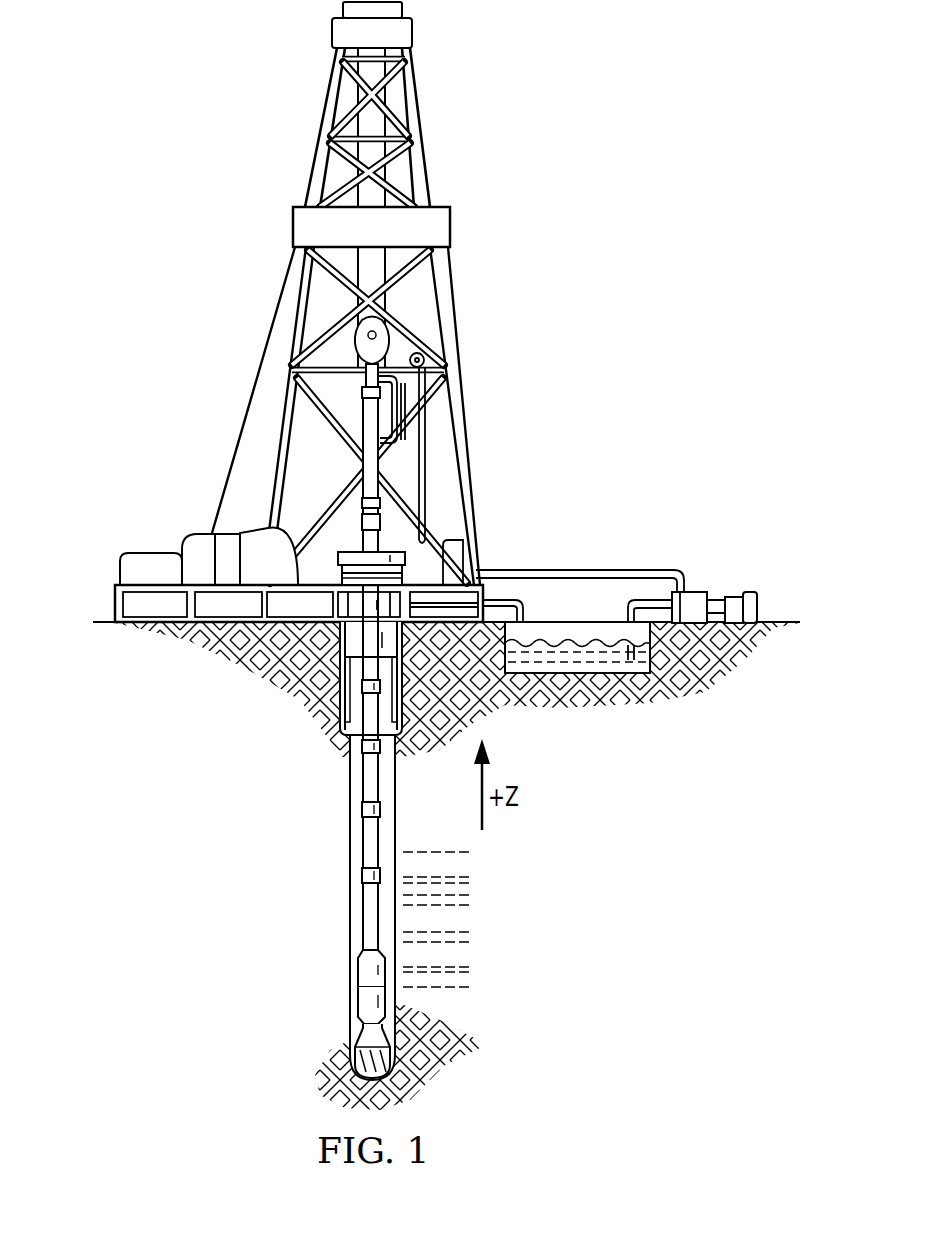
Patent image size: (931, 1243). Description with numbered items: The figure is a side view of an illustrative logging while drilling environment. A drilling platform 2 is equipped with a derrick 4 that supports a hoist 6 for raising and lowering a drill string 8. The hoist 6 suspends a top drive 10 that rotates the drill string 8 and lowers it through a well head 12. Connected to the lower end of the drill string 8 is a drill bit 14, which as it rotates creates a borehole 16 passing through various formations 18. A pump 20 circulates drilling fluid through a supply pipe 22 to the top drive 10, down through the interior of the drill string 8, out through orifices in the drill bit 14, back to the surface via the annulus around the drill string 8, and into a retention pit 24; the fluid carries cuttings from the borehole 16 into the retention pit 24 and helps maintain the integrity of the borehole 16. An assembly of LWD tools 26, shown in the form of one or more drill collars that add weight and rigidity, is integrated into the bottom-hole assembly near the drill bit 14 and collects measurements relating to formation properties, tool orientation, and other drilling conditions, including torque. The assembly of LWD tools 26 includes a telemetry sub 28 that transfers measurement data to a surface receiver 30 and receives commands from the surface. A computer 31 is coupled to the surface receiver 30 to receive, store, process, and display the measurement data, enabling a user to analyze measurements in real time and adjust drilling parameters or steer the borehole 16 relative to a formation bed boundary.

The drilling platform 2 is at (115, 605).
The derrick 4 is at (422, 127).
The hoist 6 is at (356, 350).
The drill string 8 is at (380, 778).
The top drive 10 is at (368, 430).
The well head 12 is at (350, 545).
The drill bit 14 is at (395, 1050).
The borehole 16 is at (395, 797).
The formations 18 is at (478, 850).
The pump 20 is at (696, 592).
The supply pipe 22 is at (587, 570).
The retention pit 24 is at (577, 650).
The assembly of LWD tools 26 is at (365, 1002).
The telemetry sub 28 is at (365, 972).
The surface receiver 30 is at (387, 503).
The computer 31 is at (215, 558).